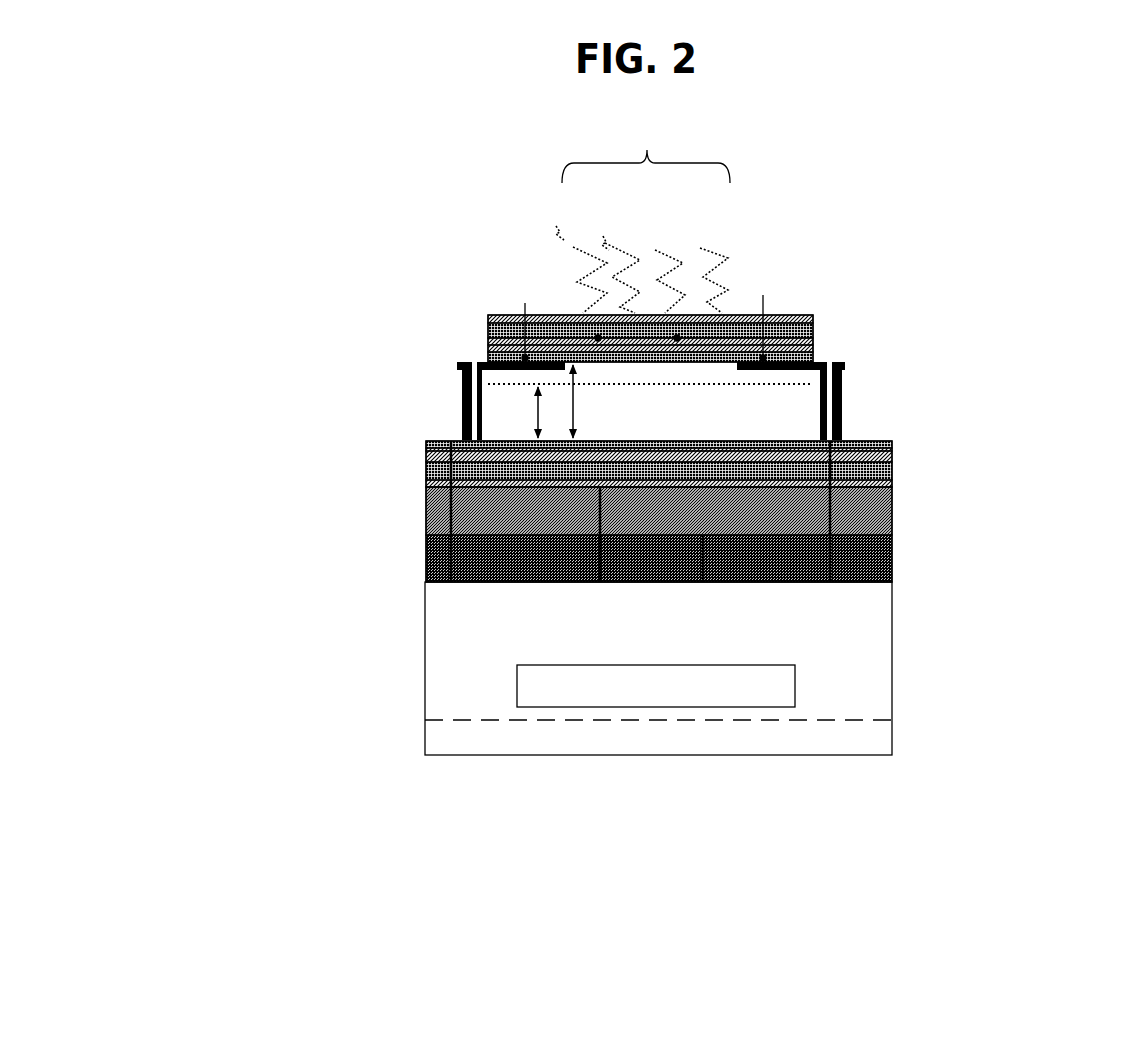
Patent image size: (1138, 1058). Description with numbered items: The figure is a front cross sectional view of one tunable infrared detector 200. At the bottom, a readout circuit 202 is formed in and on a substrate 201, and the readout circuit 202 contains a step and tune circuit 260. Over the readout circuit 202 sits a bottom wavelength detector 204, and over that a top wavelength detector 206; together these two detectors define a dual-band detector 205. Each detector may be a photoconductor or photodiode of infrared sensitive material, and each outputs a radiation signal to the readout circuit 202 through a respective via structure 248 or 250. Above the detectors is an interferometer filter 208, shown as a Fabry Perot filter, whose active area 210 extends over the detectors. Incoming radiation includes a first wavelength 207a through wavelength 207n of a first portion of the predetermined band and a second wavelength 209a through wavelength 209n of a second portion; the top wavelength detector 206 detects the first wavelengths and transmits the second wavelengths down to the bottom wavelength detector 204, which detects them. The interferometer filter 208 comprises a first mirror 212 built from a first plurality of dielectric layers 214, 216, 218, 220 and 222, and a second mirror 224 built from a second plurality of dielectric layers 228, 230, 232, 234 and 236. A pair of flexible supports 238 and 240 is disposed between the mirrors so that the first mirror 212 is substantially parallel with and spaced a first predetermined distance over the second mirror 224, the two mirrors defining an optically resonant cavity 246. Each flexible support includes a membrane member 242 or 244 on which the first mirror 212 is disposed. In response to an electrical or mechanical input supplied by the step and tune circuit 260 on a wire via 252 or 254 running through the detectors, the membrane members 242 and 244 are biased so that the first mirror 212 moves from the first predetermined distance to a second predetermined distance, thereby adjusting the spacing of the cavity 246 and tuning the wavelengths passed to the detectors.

The tunable infrared detector 200 is at (632, 455).
The substrate 201 is at (891, 727).
The readout circuit 202 is at (889, 638).
The bottom wavelength detector 204 is at (892, 535).
The dual-band detector 205 is at (1003, 482).
The top wavelength detector 206 is at (892, 487).
The first wavelength 207a is at (553, 220).
The first-portion wavelength 207n is at (663, 244).
The interferometer filter 208 is at (952, 315).
The second wavelength 209a is at (609, 224).
The second-portion wavelength 209n is at (728, 254).
The active area 210 is at (646, 150).
The first mirror 212 is at (823, 315).
The dielectric layer 214 is at (489, 317).
The dielectric layer 216 is at (488, 327).
The dielectric layer 218 is at (488, 343).
The dielectric layer 220 is at (488, 348).
The dielectric layer 222 is at (488, 357).
The second mirror 224 is at (892, 443).
The dielectric layer 228 is at (427, 443).
The dielectric layer 230 is at (427, 447).
The dielectric layer 232 is at (427, 457).
The dielectric layer 234 is at (427, 472).
The dielectric layer 236 is at (427, 482).
The flexible support 238 is at (485, 406).
The flexible support 240 is at (818, 404).
The membrane member 242 is at (533, 319).
The membrane member 244 is at (771, 315).
The optically resonant cavity 246 is at (733, 413).
The via structure 248 is at (604, 584).
The via structure 250 is at (707, 584).
The wire via 252 is at (456, 584).
The wire via 254 is at (829, 586).
The step and tune circuit 260 is at (779, 696).